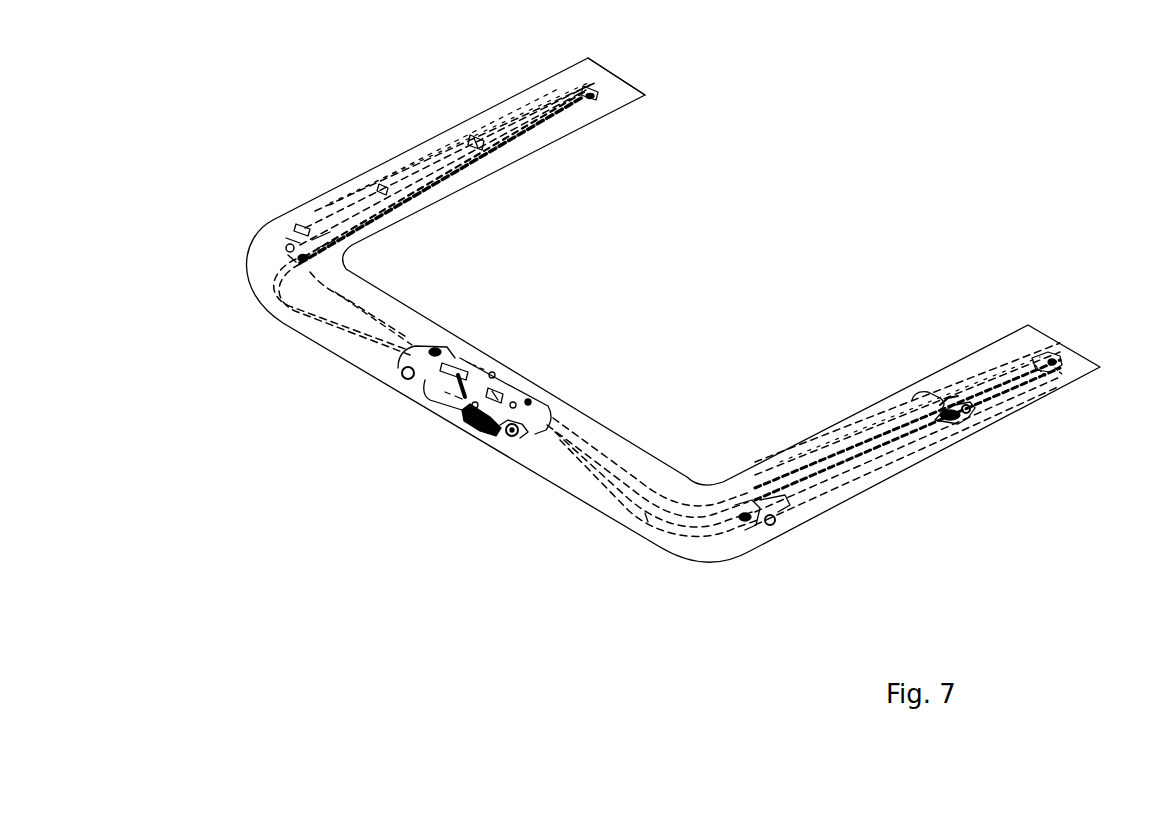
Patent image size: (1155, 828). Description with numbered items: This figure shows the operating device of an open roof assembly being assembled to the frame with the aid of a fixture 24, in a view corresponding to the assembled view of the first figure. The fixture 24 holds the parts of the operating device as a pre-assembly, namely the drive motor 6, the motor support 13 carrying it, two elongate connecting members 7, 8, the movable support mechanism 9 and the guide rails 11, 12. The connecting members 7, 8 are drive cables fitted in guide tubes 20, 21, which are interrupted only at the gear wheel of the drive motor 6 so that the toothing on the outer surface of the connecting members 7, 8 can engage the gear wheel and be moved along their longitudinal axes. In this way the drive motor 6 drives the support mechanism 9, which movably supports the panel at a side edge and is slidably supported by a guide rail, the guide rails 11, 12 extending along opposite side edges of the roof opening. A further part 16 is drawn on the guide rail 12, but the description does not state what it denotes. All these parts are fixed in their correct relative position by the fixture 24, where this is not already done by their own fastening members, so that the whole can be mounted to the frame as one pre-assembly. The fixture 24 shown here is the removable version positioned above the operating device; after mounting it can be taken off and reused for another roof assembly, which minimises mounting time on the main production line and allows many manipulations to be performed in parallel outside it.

The drive motor 6 is at (447, 407).
The elongate connecting member 7 is at (405, 232).
The elongate connecting member 8 is at (652, 503).
The movable support mechanism 9 is at (380, 147).
The guide rail 11 is at (571, 97).
The guide rail 12 is at (1045, 382).
The motor support 13 is at (530, 437).
The coupling element 16 is at (957, 443).
The guide tube 20 is at (283, 316).
The guide tube 21 is at (638, 532).
The fixture 24 is at (645, 95).